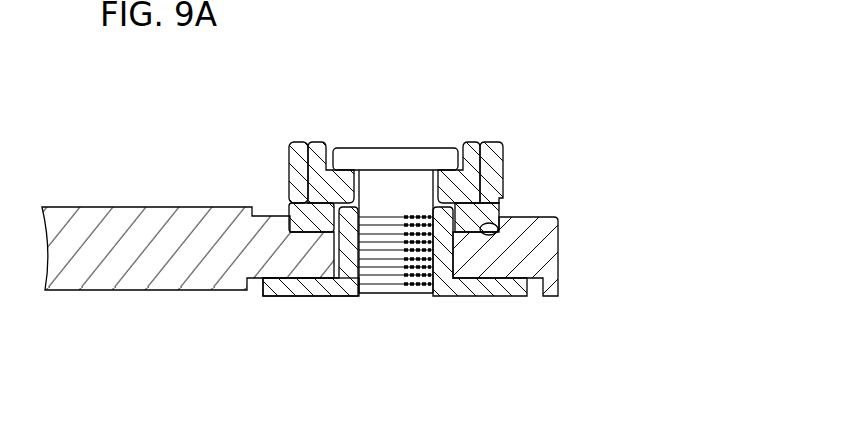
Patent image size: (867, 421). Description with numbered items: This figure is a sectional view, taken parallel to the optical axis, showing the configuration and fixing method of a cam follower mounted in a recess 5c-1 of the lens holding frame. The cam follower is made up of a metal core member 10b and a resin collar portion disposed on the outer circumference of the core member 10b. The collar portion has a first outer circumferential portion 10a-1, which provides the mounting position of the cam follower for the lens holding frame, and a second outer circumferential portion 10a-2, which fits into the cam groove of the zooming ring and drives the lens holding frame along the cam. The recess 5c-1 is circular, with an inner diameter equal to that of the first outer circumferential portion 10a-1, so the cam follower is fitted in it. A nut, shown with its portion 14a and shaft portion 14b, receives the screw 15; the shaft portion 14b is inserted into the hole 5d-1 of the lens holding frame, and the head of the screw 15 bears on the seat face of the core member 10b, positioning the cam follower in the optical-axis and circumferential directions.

The screw 15 is at (378, 148).
The core member 10b is at (476, 142).
The second outer circumferential portion 10a-2 is at (506, 170).
The first outer circumferential portion 10a-1 is at (500, 213).
The bracket plate portion 14a is at (280, 297).
The shaft portion 14b is at (336, 234).
The recess 5c-1 is at (497, 235).
The hole 5d-1 is at (445, 268).